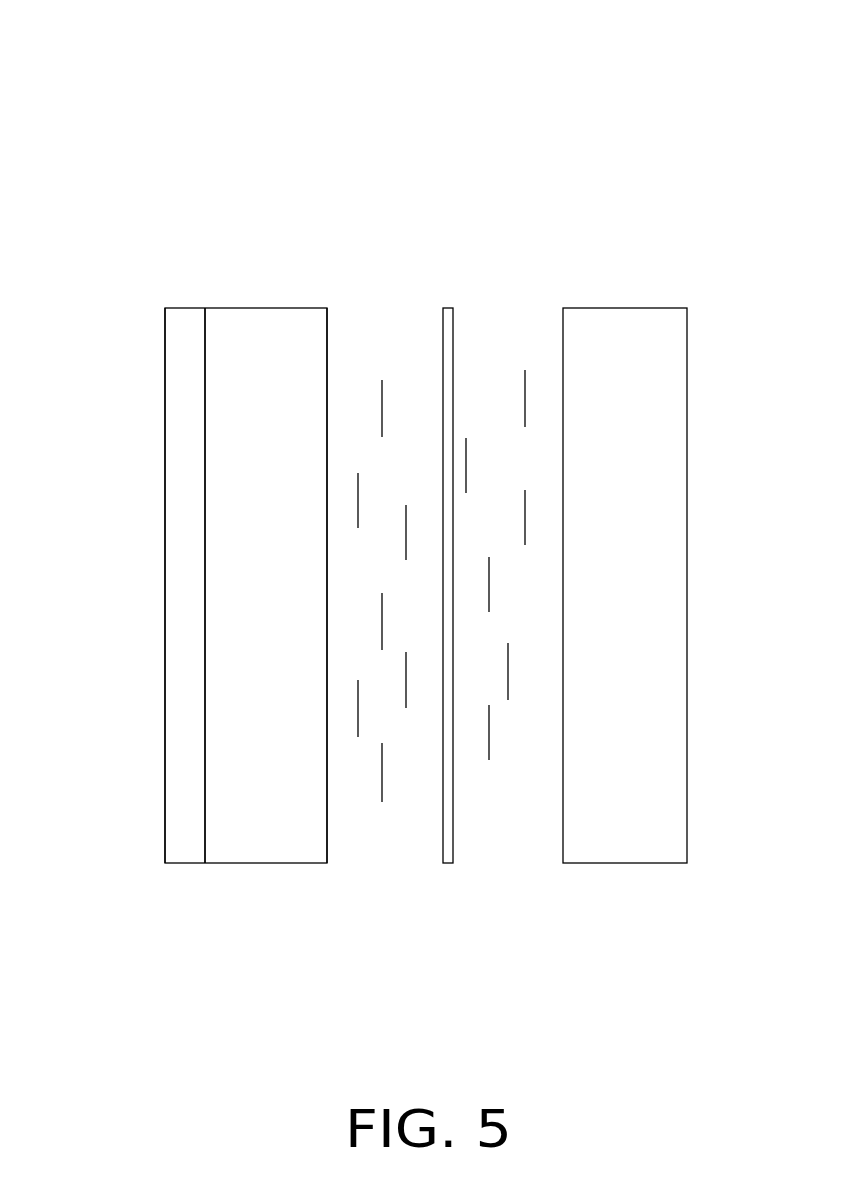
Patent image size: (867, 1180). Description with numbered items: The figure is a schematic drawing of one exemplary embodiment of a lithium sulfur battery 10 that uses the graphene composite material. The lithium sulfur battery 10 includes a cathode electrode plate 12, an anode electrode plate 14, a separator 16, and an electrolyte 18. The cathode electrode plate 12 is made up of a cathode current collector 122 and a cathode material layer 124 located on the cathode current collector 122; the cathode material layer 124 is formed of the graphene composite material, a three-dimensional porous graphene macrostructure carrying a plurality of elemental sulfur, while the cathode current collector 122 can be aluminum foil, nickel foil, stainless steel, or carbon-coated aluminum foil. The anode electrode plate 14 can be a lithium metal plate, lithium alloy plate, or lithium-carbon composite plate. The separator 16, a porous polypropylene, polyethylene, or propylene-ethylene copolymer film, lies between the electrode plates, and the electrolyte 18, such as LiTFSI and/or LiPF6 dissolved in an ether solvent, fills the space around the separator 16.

The lithium sulfur battery 10 is at (423, 67).
The cathode electrode plate 12 is at (200, 297).
The cathode current collector 122 is at (183, 482).
The cathode material layer 124 is at (243, 423).
The anode electrode plate 14 is at (657, 340).
The separator 16 is at (456, 308).
The electrolyte 18 is at (380, 323).